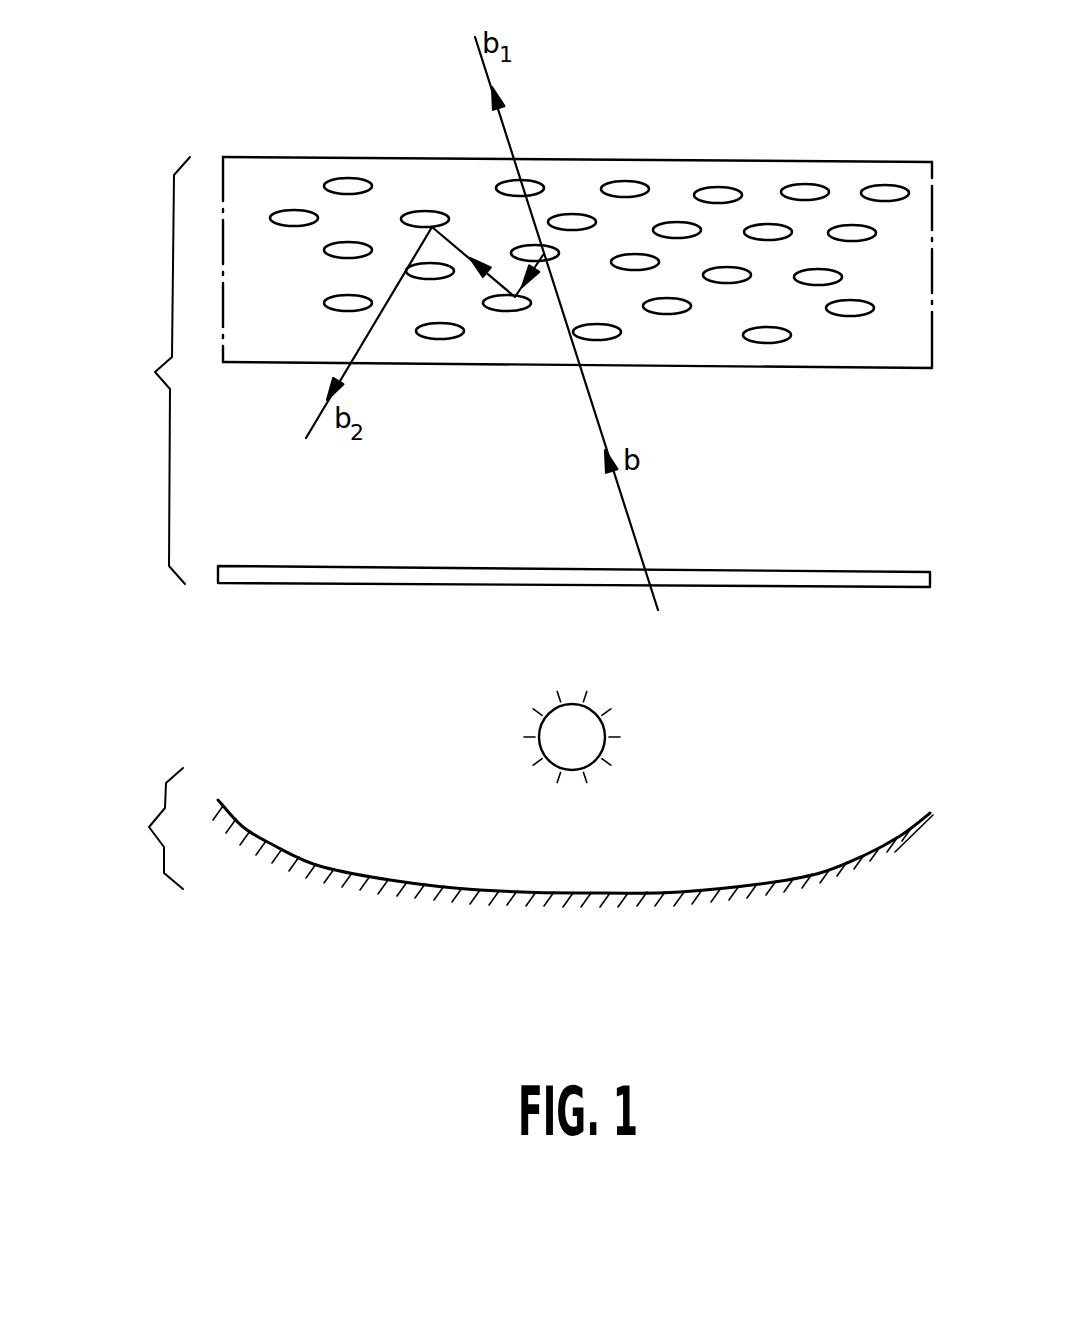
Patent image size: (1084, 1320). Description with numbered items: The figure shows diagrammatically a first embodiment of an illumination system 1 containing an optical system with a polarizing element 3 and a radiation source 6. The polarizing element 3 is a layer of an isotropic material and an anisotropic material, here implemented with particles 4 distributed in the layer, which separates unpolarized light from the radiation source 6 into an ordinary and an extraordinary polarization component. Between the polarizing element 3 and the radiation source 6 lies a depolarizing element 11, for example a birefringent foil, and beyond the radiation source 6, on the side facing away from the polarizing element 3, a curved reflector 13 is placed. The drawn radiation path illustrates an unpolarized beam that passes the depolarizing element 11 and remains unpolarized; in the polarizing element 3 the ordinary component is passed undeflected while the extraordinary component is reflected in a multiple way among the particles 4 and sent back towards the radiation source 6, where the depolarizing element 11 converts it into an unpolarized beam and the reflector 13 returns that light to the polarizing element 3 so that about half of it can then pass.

The illumination system 1 is at (155, 372).
The polarizing element 3 is at (913, 178).
The particles 4 is at (762, 228).
The radiation source 6 is at (583, 736).
The depolarizing element 11 is at (882, 582).
The reflector 13 is at (242, 827).